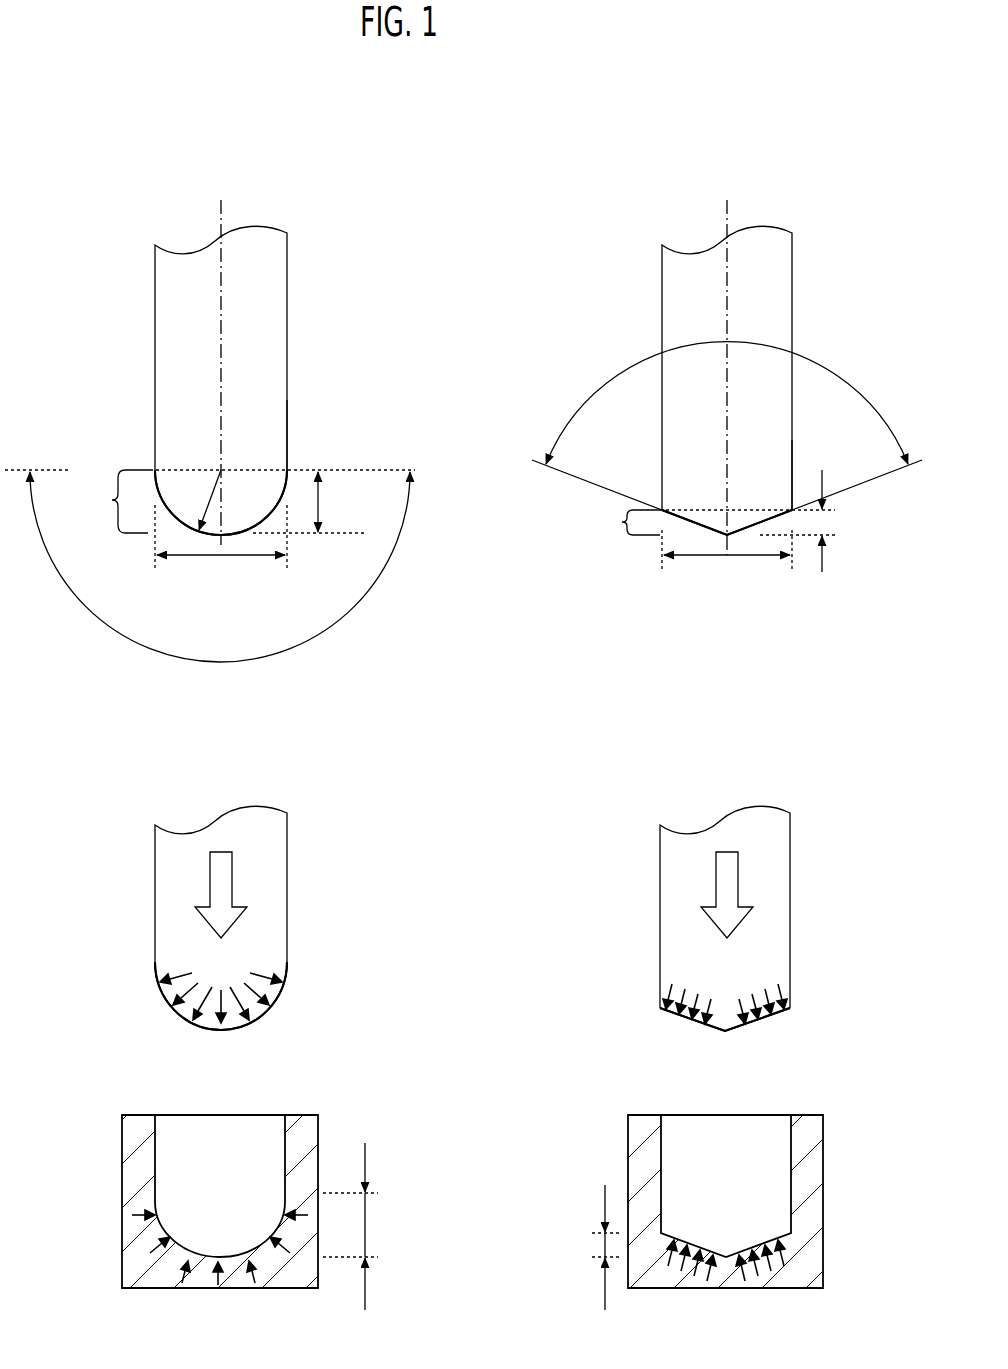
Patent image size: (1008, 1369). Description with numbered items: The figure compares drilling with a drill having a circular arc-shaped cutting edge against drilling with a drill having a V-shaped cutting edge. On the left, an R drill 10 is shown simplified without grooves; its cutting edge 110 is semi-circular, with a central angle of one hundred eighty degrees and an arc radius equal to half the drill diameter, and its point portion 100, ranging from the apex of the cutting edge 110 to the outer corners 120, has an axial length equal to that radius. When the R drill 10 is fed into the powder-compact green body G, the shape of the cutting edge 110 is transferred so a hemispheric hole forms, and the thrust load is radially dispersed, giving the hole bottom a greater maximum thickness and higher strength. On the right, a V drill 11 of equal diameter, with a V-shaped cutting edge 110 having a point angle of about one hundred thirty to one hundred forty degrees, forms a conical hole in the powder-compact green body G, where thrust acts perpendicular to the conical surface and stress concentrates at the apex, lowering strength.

The R drill 10 is at (143, 305).
The V drill 11 is at (650, 305).
The point portion 100 is at (421, 504).
The cutting edge 110 is at (157, 490).
The outer corners 120 is at (287, 470).
The work material (powder-compact green body) G is at (308, 1130).